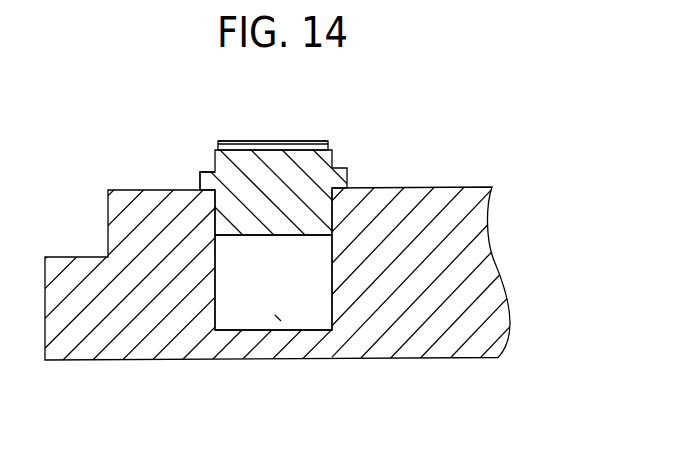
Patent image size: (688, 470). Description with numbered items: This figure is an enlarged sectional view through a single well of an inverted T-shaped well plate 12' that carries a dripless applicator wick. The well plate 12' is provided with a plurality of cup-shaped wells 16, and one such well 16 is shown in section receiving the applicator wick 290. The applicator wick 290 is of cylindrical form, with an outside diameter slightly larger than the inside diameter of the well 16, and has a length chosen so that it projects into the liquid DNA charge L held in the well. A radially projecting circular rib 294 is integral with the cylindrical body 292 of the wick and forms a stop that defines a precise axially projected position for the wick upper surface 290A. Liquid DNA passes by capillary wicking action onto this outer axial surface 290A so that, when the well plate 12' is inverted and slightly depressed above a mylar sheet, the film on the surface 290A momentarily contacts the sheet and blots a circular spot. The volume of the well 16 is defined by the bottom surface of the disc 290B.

The well plate 12' is at (278, 247).
The well 16 is at (330, 237).
The applicator wick 290 is at (228, 141).
The wick upper surface 290A is at (312, 141).
The bottom surface of the disc 290B is at (260, 235).
The cylindrical body 292 is at (330, 146).
The radially projecting circular rib 294 is at (200, 180).
The liquid DNA charge L is at (278, 318).